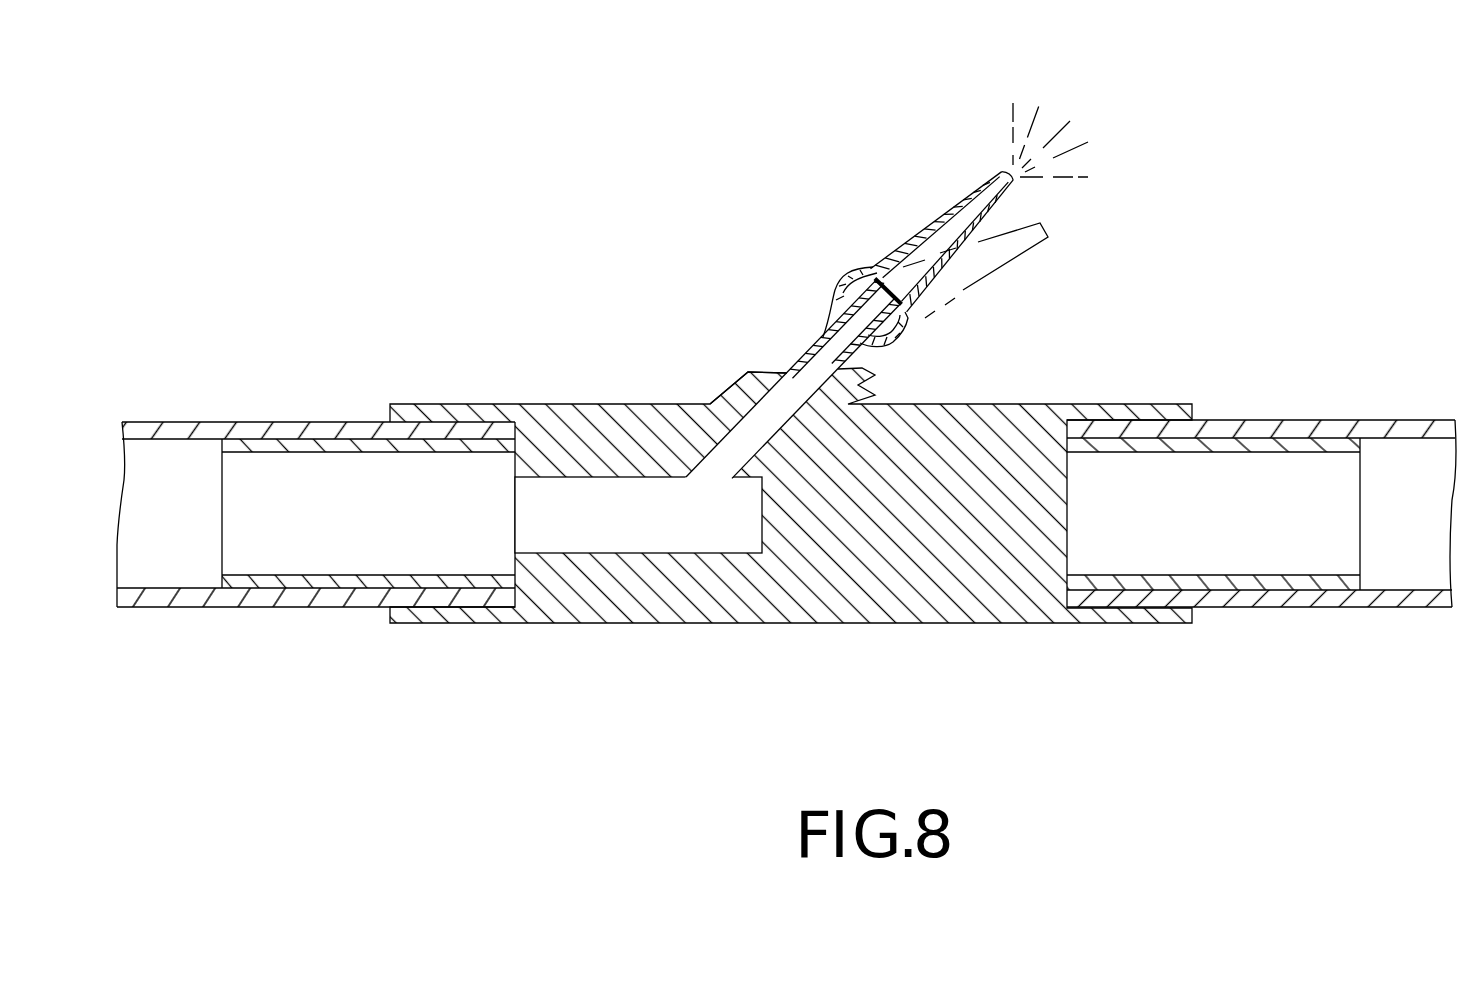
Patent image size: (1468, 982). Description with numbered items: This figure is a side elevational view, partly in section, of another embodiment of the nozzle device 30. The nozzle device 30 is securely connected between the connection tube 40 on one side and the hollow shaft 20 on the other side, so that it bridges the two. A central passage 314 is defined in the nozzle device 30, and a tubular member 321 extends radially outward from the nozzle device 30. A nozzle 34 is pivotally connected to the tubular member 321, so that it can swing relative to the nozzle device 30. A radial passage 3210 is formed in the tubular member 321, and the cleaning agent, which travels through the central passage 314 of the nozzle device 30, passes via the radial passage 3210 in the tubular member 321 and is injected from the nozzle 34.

The hollow shaft 20 is at (206, 418).
The nozzle device 30 is at (832, 650).
The central passage 314 is at (605, 540).
The tubular member 321 is at (738, 390).
The radial passage 3210 is at (803, 348).
The nozzle 34 is at (908, 238).
The connection tube 40 is at (1376, 610).